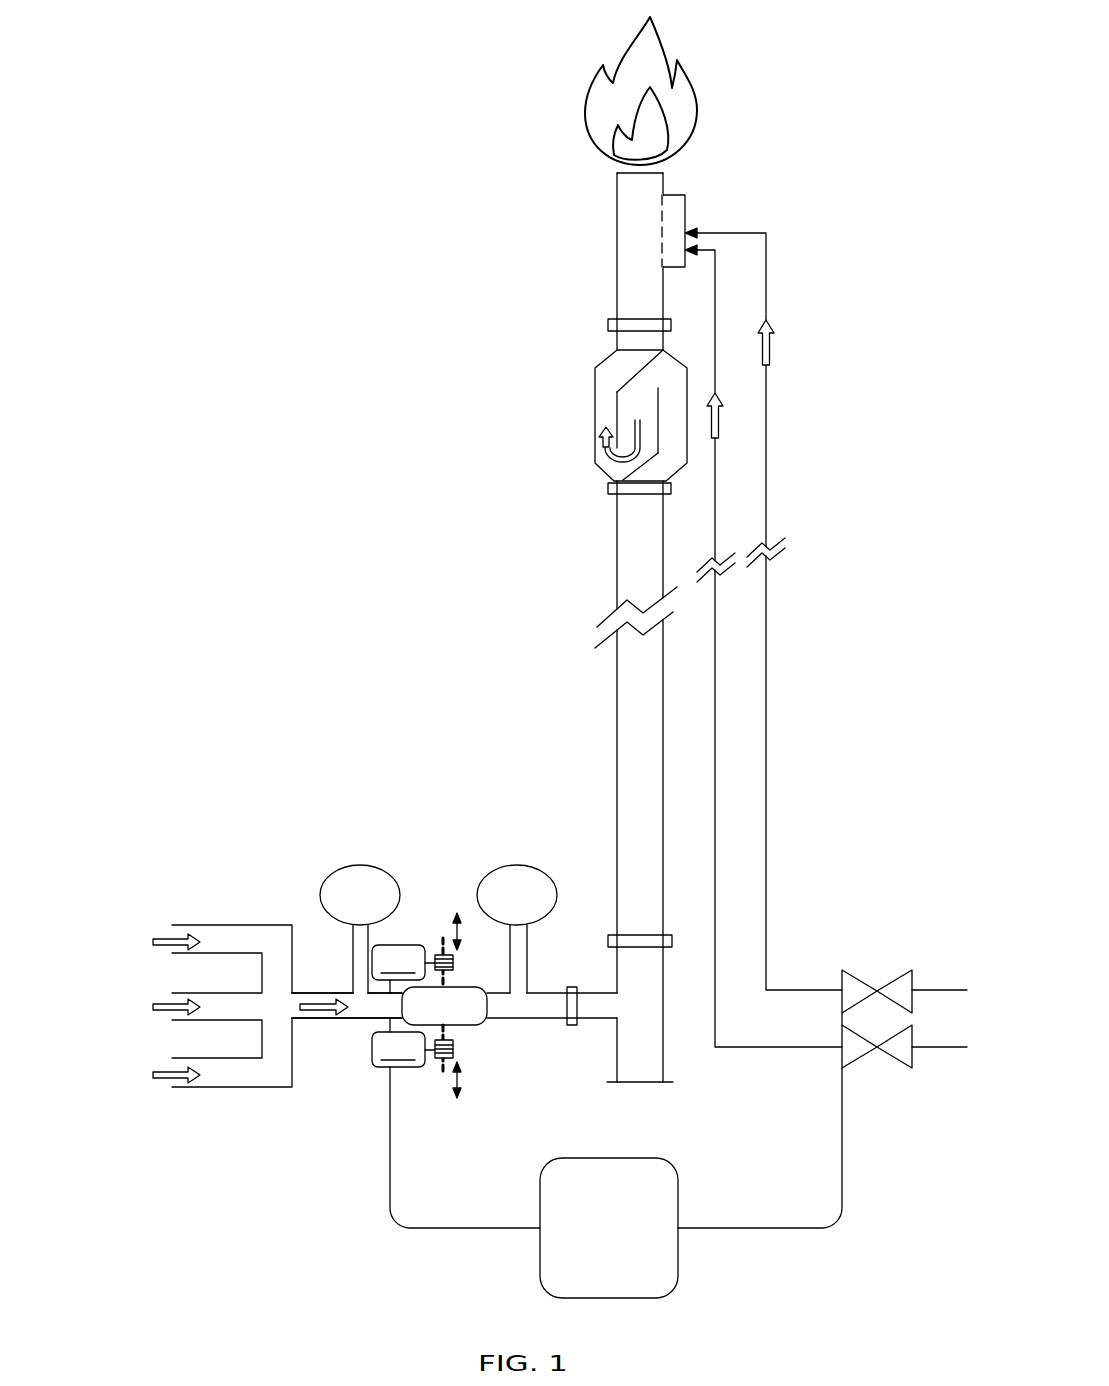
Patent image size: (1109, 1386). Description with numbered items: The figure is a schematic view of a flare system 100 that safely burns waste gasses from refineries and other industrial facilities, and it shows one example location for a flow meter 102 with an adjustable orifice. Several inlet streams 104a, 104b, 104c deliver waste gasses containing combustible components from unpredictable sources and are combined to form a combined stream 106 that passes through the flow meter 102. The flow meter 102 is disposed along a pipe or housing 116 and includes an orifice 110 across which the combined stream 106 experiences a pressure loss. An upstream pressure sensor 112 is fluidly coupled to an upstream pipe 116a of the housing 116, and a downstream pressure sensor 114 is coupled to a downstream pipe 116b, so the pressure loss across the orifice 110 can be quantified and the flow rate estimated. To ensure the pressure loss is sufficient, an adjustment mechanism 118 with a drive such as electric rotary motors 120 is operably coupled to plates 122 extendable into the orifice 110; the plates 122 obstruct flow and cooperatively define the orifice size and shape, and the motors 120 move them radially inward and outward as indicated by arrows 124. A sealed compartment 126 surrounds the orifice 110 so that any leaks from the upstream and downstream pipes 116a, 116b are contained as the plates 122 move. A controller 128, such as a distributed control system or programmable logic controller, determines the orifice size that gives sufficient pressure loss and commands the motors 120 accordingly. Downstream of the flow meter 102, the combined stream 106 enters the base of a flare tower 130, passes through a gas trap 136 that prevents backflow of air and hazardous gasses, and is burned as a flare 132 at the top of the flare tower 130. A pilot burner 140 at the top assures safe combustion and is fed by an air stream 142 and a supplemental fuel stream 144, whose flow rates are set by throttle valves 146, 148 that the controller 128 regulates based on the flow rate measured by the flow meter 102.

The flare system 100 is at (845, 182).
The flow meter 102 is at (338, 812).
The inlet stream 104a is at (158, 937).
The inlet stream 104b is at (158, 1002).
The inlet stream 104c is at (158, 1070).
The combined stream 106 is at (598, 447).
The orifice 110 is at (427, 1005).
The upstream pressure sensor 112 is at (388, 872).
The downstream pressure sensor 114 is at (545, 872).
The housing 116 is at (454, 970).
The upstream pipe 116a is at (312, 993).
The downstream pipe 116b is at (537, 952).
The adjustment mechanism 118 is at (335, 1224).
The electric rotary motors 120 is at (403, 1006).
The plates 122 is at (443, 938).
The arrows 124 is at (458, 945).
The sealed compartment 126 is at (487, 1018).
The controller 128 is at (672, 1165).
The flare tower 130 is at (617, 562).
The flare 132 is at (648, 42).
The gas trap 136 is at (595, 391).
The pilot burner 140 is at (677, 202).
The air stream 142 is at (716, 430).
The supplemental fuel stream 144 is at (767, 358).
The throttle valve 146 is at (912, 1063).
The throttle valve 148 is at (912, 978).